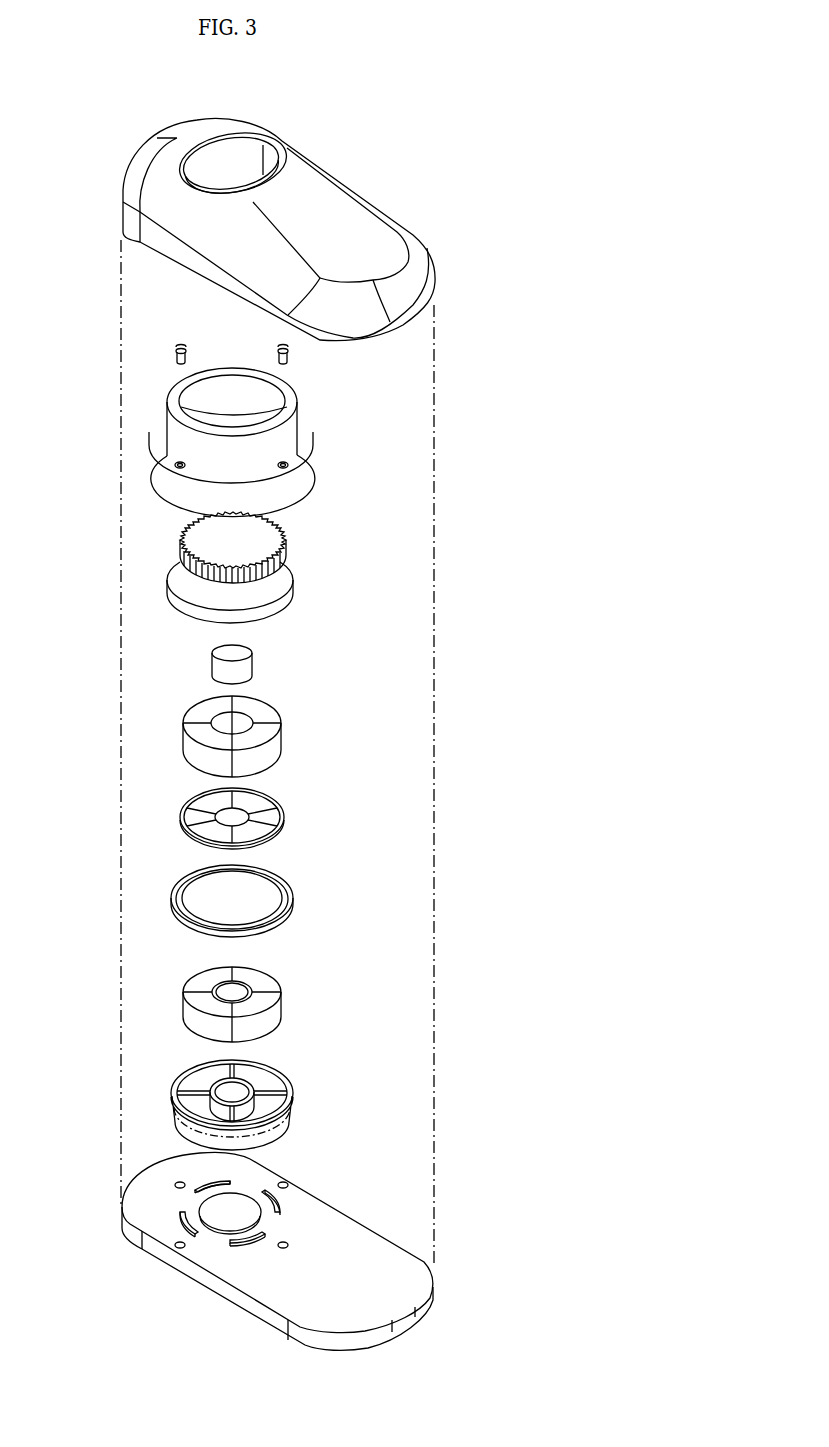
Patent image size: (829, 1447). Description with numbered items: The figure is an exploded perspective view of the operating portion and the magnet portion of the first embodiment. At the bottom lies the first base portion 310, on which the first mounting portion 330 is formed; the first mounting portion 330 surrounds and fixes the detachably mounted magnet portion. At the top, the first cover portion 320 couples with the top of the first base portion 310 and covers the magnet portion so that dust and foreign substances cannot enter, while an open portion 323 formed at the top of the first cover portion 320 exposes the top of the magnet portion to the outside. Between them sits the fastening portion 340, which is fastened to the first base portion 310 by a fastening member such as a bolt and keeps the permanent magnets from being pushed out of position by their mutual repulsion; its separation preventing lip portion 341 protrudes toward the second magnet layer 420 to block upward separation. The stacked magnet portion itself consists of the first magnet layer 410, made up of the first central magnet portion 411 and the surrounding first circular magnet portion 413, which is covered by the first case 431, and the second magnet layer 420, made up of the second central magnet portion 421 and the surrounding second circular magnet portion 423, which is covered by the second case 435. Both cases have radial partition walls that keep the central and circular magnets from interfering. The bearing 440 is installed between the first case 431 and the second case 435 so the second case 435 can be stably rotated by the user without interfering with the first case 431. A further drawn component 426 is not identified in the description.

The first base portion 310 is at (357, 1227).
The first cover portion 320 is at (356, 225).
The open portion 323 is at (207, 157).
The first mounting portion 330 is at (287, 1200).
The fastening portion 340 is at (304, 433).
The separation preventing lip portion 341 is at (293, 398).
The first magnet layer 410 is at (70, 930).
The first central magnet portion 411 is at (229, 981).
The first circular magnet portion 413 is at (188, 997).
The second magnet layer 420 is at (70, 662).
The second central magnet portion 421 is at (212, 670).
The second circular magnet portion 423 is at (195, 730).
The support plate 426 is at (183, 818).
The first case 431 is at (180, 1121).
The second case 435 is at (187, 586).
The bearing 440 is at (178, 882).